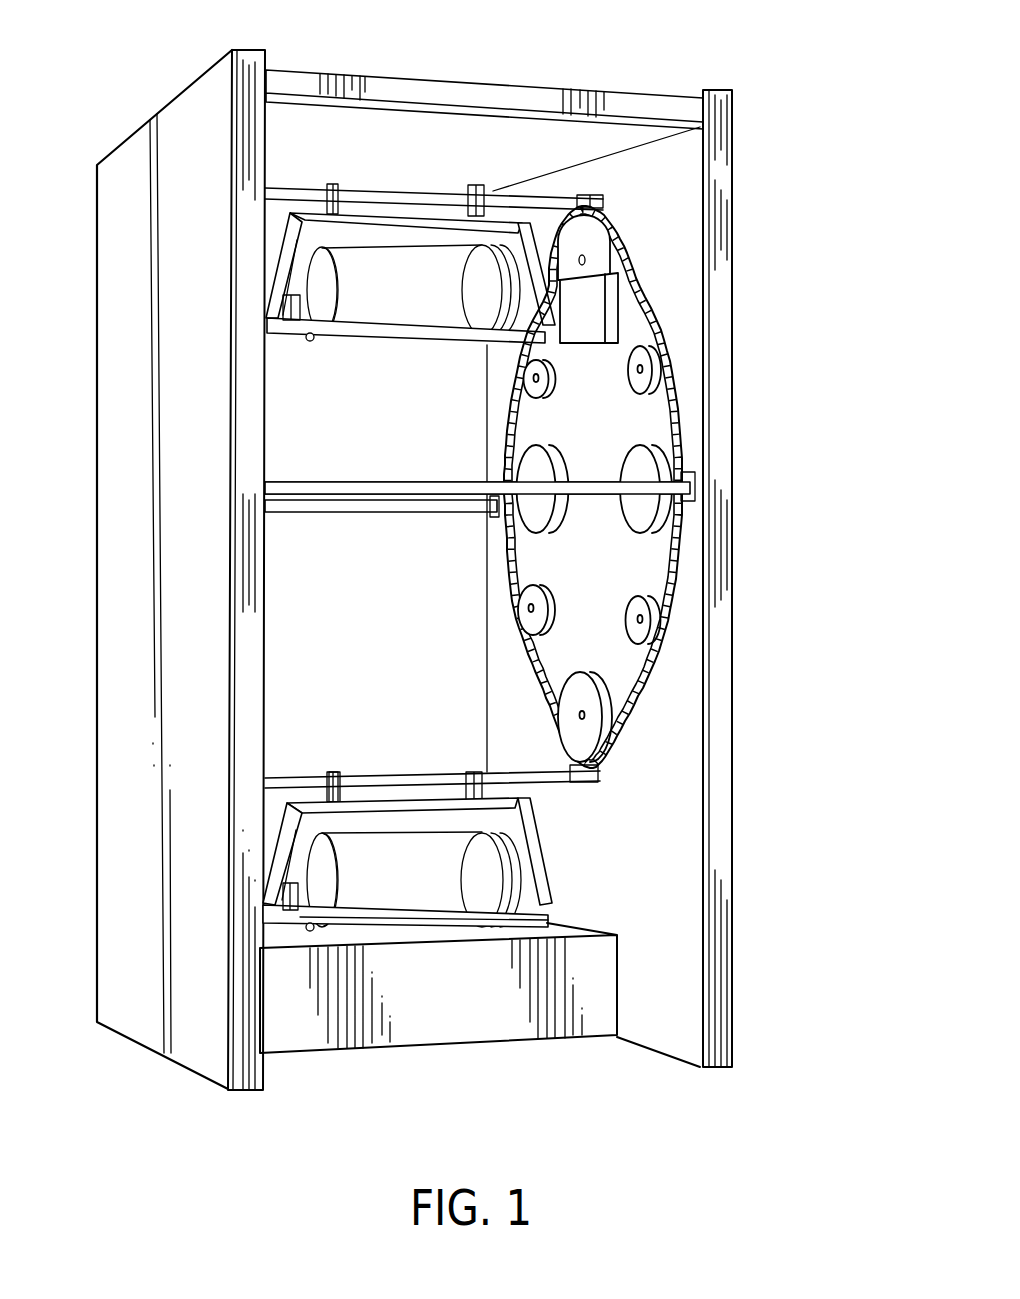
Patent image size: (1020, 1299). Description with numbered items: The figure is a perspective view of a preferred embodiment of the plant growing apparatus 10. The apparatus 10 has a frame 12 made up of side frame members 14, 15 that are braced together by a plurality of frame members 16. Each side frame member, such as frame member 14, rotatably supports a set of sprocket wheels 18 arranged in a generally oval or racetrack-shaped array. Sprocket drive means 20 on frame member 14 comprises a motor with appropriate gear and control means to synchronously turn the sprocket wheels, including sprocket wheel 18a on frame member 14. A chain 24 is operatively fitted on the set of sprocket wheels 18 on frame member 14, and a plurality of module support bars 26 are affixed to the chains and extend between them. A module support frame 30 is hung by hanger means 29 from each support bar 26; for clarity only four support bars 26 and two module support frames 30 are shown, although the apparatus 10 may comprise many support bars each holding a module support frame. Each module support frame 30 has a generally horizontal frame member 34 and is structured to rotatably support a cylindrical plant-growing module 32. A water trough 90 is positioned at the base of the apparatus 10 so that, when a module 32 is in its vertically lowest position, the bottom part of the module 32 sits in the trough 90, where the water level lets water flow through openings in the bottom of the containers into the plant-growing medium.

The plant growing apparatus 10 is at (792, 398).
The frame 12 is at (529, 552).
The side frame member 14 is at (722, 148).
The side frame member 15 is at (198, 117).
The frame member 16 is at (548, 102).
The sprocket wheels 18 is at (642, 361).
The sprocket wheel 18a is at (595, 253).
The sprocket drive means 20 is at (592, 292).
The chain 24 is at (680, 435).
The module support bar 26 is at (405, 195).
The hanger means 29 is at (332, 773).
The module support frame 30 is at (545, 465).
The cylindrical plant-growing module 32 is at (418, 304).
The horizontal frame member 34 is at (494, 222).
The water trough 90 is at (463, 1015).